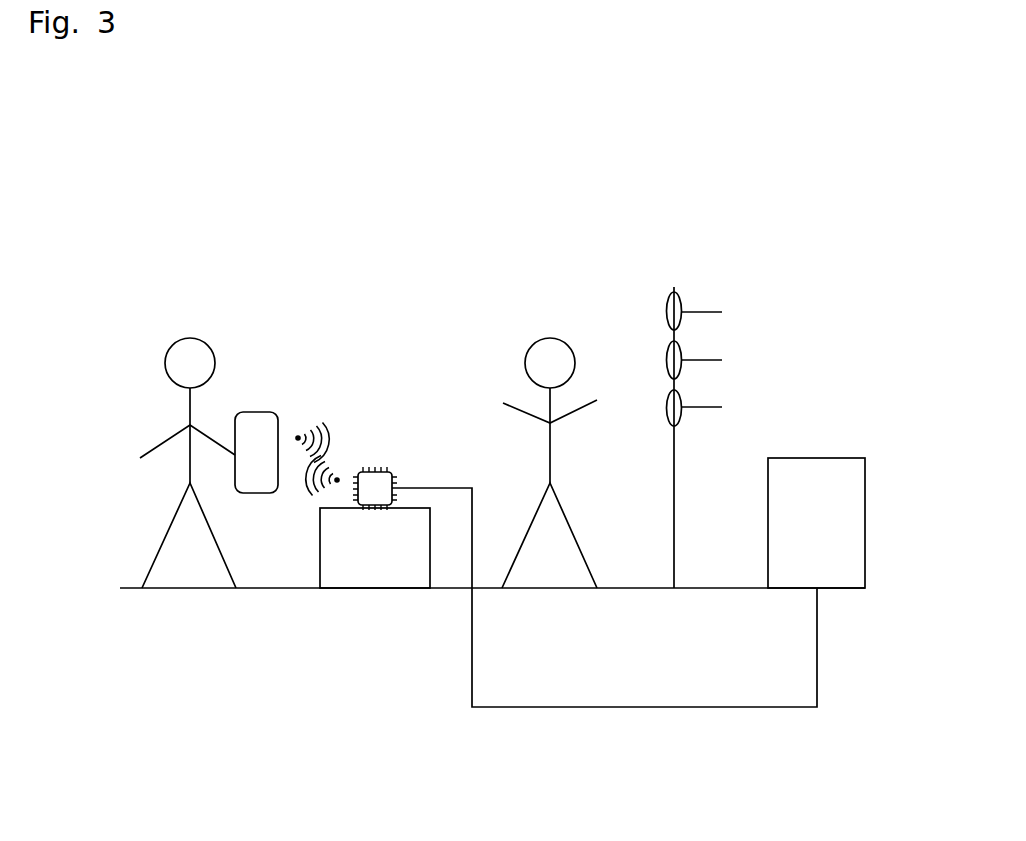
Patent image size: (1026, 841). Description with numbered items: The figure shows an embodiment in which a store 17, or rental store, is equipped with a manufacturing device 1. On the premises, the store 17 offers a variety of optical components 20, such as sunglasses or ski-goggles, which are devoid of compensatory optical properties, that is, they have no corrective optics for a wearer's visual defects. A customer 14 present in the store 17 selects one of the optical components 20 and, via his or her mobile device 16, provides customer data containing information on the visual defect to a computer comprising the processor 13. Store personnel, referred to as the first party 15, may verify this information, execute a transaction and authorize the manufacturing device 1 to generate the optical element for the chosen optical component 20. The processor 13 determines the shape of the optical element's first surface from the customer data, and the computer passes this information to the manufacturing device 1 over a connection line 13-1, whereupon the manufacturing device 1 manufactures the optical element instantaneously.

The manufacturing device 1 is at (873, 511).
The processor 13 is at (373, 490).
The connection line 13-1 is at (502, 707).
The customer 14 is at (188, 363).
The first party 15 is at (552, 363).
The mobile device 16 is at (262, 440).
The store 17 is at (606, 188).
The optical components 20 is at (702, 303).